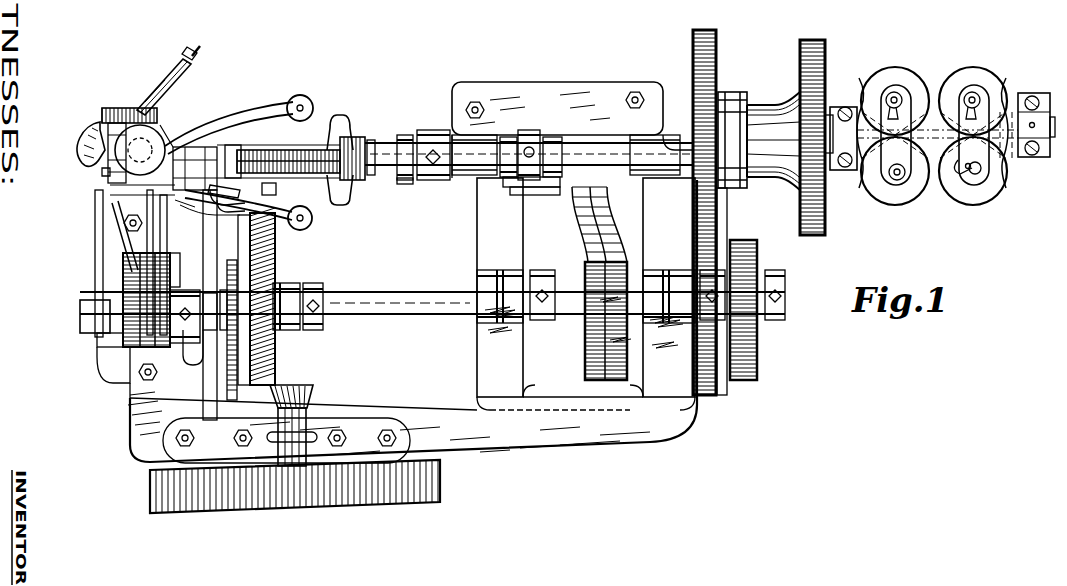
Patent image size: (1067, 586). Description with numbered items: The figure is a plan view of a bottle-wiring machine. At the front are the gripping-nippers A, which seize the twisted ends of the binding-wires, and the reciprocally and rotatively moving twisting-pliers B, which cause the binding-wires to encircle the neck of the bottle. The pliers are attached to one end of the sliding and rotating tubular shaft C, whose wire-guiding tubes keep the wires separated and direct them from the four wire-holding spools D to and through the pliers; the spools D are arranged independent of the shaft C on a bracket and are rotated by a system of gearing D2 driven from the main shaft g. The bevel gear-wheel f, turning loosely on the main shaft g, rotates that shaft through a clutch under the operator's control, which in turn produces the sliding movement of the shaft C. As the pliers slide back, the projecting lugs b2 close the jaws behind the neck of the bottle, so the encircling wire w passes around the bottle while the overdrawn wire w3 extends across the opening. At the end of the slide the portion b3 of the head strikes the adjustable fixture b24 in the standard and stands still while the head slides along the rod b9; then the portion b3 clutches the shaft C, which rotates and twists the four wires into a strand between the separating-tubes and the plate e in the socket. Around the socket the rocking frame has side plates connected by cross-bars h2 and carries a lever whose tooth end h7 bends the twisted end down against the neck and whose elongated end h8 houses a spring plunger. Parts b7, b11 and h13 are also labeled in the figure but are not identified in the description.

The gripping-nippers A is at (100, 178).
The twisting-pliers B is at (239, 162).
The tubular shaft C is at (384, 145).
The spools D is at (940, 136).
The system of gearing D2 is at (802, 193).
The projecting lugs b2 is at (347, 157).
The portion of the head b3 is at (368, 140).
The screw nut block b7 is at (239, 150).
The rod b9 is at (279, 150).
The link b11 is at (279, 195).
The adjustable fixture b24 is at (404, 185).
The plate e is at (163, 353).
The bevel gear-wheel f is at (268, 243).
The main shaft g is at (416, 312).
The cross-bars h2 is at (126, 110).
The tooth end h7 is at (84, 148).
The elongated end h8 is at (168, 80).
The catch h13 is at (100, 172).
The encircling wire w is at (773, 131).
The overdrawn wire w3 is at (773, 156).